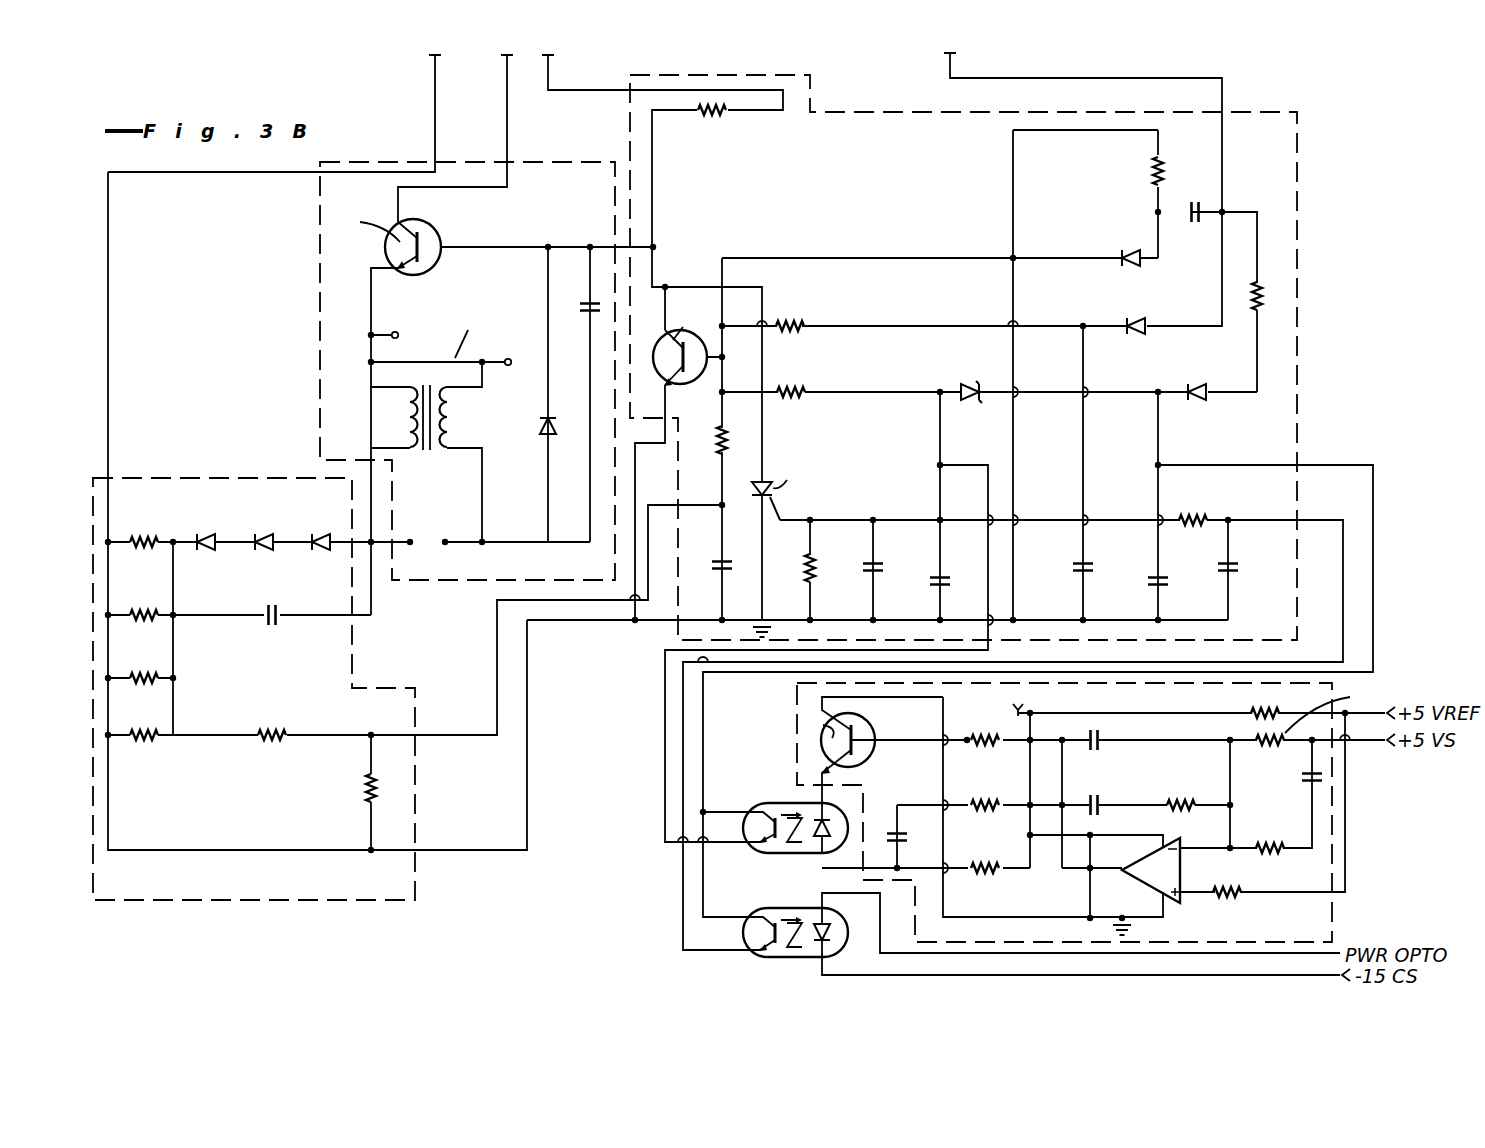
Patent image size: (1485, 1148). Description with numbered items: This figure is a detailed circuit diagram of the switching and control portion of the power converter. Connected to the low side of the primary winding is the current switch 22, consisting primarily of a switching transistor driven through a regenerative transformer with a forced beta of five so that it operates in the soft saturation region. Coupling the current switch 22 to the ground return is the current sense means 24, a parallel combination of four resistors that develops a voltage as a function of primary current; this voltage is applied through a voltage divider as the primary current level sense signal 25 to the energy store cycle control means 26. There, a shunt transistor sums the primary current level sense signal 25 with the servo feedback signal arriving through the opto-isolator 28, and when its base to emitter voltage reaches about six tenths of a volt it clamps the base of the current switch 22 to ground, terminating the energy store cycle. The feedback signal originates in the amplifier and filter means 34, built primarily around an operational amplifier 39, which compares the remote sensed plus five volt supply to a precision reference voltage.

The current switch 22 is at (320, 187).
The current sense means 24 is at (327, 902).
The primary current level sense signal 25 is at (448, 733).
The energy store cycle control means 26 is at (990, 112).
The opto-isolator 28 is at (787, 853).
The amplifier and filter means 34 is at (1084, 834).
The operational amplifier 39 is at (1150, 870).